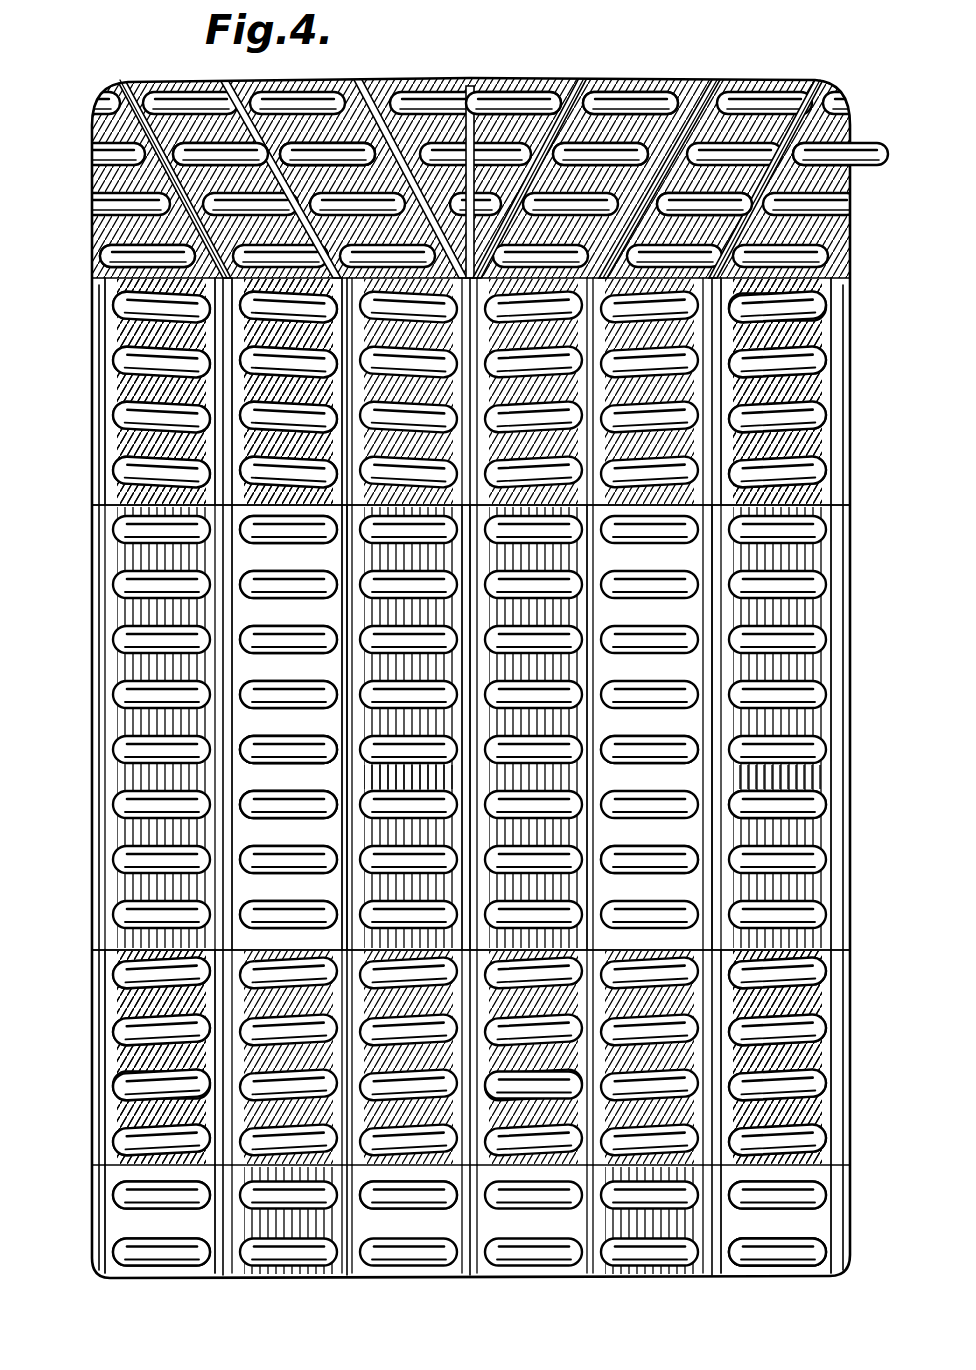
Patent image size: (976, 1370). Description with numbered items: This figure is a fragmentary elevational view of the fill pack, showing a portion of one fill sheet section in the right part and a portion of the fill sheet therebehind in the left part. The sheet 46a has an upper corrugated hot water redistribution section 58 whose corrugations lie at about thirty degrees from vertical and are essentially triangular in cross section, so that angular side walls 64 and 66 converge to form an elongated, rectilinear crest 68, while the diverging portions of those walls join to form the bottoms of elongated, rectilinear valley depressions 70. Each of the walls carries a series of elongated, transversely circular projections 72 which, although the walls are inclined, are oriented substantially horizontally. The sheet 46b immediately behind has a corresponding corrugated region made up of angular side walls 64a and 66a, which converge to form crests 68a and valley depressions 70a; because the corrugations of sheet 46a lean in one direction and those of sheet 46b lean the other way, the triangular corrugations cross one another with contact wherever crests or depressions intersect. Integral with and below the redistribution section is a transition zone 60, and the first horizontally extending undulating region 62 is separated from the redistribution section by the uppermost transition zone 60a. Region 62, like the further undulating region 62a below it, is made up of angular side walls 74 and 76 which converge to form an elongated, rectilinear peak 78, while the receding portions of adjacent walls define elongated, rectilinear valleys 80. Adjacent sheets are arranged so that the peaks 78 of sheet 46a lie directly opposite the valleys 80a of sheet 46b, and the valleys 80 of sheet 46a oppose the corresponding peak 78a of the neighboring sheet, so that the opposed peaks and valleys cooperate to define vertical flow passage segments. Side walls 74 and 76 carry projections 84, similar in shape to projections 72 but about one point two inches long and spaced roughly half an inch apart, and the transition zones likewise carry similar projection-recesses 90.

The end sheet 46a is at (852, 575).
The sheet 46b is at (88, 556).
The hot water redistribution section 58 is at (90, 103).
The transition zone 60 is at (104, 398).
The uppermost transition zone 60a is at (102, 1052).
The first horizontally extending undulating region 62 is at (95, 760).
The undulating region 62a is at (98, 1208).
The angular side wall 64 is at (512, 80).
The angular side wall 64a is at (102, 262).
The angular side wall 66 is at (642, 80).
The angular side wall 66a is at (172, 82).
The crest 68 is at (715, 80).
The crest 68a is at (126, 80).
The valley depression 70 is at (585, 80).
The valley depression 70a is at (242, 82).
The projection 72 is at (318, 158).
The angular side wall 74 is at (822, 672).
The angular side wall 76 is at (307, 730).
The peak 78 is at (710, 607).
The peak 78a is at (345, 663).
The valley 80 is at (588, 606).
The valley 80a is at (462, 610).
The projection 84 is at (263, 812).
The projection-recess 90 is at (168, 348).